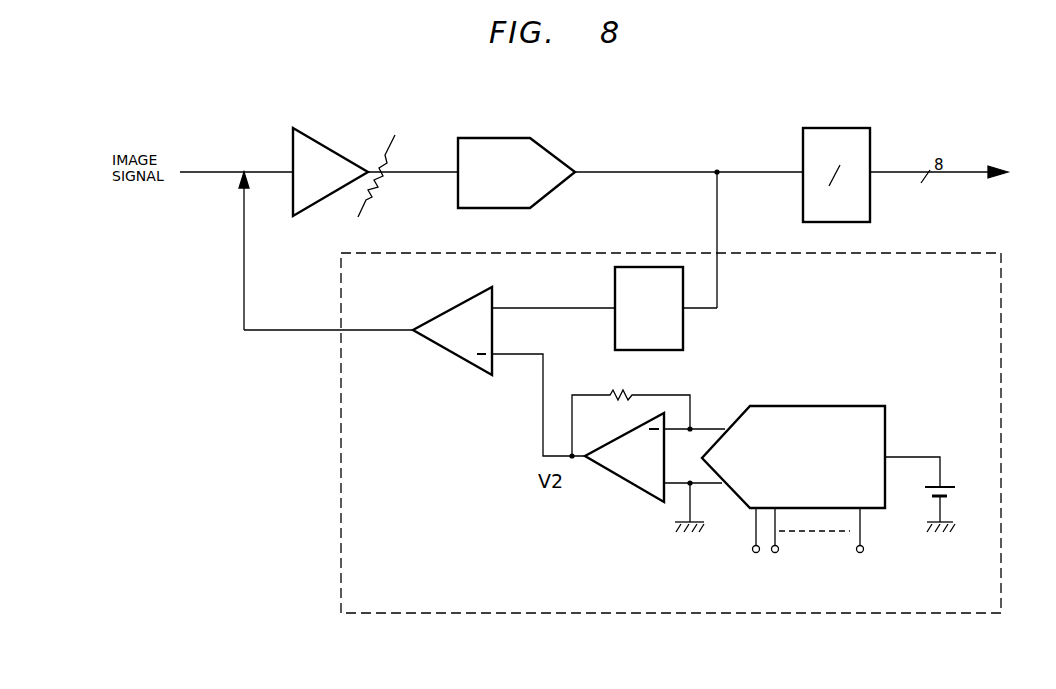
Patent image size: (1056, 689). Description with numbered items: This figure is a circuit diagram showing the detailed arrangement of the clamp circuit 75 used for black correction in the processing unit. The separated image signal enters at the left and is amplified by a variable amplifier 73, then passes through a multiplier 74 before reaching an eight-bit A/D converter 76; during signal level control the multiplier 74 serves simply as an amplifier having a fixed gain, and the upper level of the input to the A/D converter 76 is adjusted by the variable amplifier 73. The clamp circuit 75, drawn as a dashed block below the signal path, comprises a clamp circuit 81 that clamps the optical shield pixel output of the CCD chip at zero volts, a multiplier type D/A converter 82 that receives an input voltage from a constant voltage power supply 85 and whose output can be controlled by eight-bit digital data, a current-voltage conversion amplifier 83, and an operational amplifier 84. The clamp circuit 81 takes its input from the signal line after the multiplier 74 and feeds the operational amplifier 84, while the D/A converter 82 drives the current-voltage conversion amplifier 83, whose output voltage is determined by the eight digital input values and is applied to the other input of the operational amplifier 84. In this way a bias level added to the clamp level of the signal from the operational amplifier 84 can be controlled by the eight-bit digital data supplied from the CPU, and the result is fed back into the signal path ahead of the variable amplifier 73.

The variable amplifier 73 is at (328, 149).
The multiplier 74 is at (491, 137).
The clamp circuit 75 is at (340, 470).
The A/D converter 76 is at (833, 128).
The clamp circuit 81 is at (683, 329).
The multiplier type D/A converter 82 is at (841, 406).
The current-voltage conversion amplifier 83 is at (620, 476).
The operational amplifier 84 is at (441, 351).
The constant voltage power supply 85 is at (947, 496).